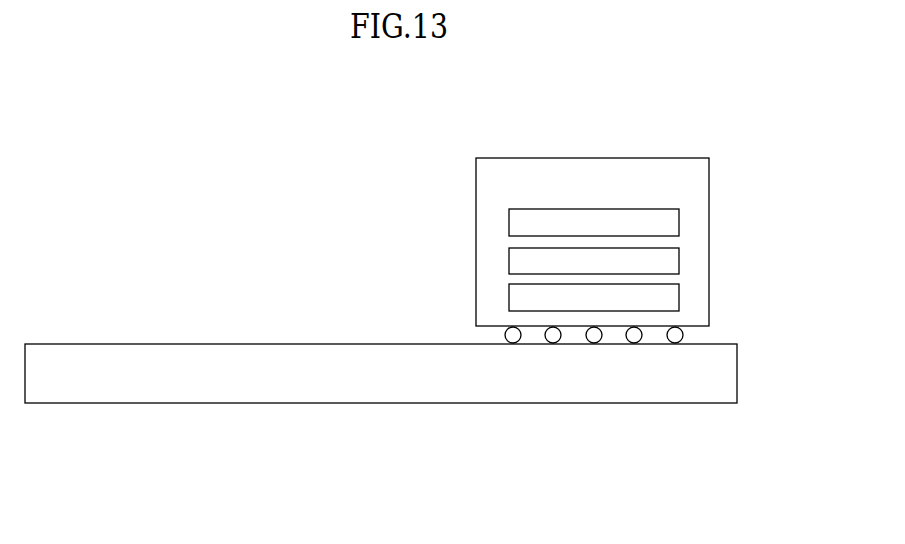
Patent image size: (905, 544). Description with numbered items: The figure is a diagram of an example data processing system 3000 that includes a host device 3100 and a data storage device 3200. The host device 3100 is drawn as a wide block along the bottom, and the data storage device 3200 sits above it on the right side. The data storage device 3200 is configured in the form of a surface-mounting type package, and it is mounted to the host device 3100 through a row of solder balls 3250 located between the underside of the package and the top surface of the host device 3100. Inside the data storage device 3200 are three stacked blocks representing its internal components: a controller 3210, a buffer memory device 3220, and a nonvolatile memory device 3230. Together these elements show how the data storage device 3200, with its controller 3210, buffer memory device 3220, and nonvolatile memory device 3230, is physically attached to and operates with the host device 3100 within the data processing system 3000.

The data processing system 3000 is at (88, 98).
The host device 3100 is at (381, 373).
The data storage device 3200 is at (592, 242).
The controller 3210 is at (594, 224).
The buffer memory device 3220 is at (594, 261).
The nonvolatile memory device 3230 is at (594, 298).
The solder balls 3250 is at (693, 336).